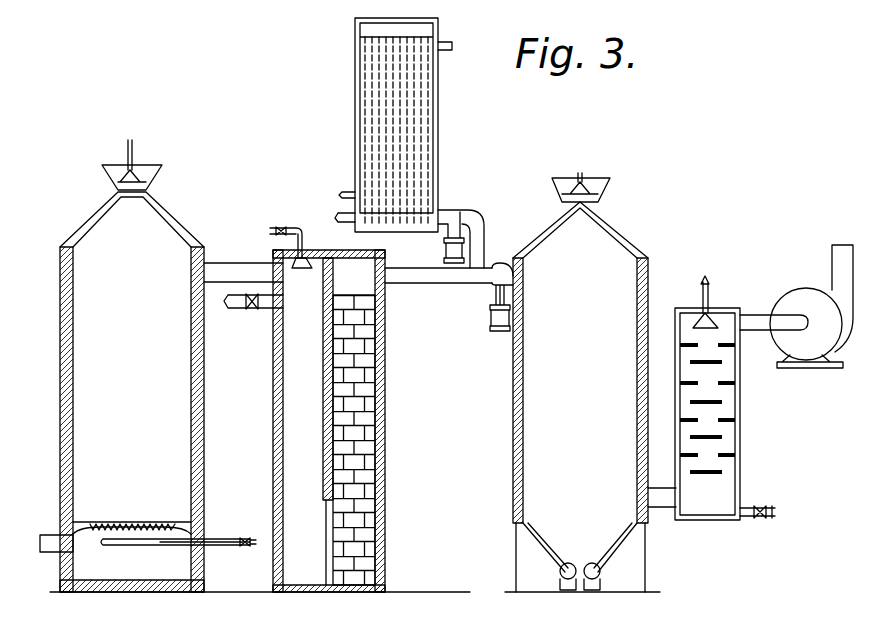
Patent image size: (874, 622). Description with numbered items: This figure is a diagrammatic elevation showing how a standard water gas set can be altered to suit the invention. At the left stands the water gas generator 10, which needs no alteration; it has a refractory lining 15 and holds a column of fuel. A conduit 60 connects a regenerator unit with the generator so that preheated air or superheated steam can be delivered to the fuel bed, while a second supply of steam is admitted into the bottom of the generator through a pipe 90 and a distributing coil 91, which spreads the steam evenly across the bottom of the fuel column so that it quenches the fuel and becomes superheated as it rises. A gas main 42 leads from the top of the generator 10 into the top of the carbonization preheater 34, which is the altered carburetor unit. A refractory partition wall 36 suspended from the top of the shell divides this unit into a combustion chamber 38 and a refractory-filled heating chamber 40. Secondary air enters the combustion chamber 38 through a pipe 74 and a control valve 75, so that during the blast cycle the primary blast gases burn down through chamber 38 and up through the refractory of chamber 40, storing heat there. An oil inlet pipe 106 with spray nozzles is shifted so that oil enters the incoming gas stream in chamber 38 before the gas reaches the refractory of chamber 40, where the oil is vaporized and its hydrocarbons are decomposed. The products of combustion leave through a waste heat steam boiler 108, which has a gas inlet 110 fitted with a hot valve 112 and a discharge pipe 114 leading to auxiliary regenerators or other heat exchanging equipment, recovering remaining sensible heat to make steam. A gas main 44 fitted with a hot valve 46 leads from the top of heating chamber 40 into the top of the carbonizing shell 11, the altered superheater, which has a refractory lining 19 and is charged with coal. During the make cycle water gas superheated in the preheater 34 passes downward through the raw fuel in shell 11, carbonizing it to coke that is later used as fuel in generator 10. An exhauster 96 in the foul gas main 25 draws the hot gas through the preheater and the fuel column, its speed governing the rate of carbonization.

The water gas generator 10 is at (204, 408).
The refractory lining 15 is at (73, 426).
The conduit 60 is at (44, 556).
The distributing coil 91 is at (120, 547).
The pipe 90 is at (236, 548).
The gas main 42 is at (219, 264).
The pipe 74 is at (230, 310).
The control valve 75 is at (254, 312).
The carbonization preheater 34 is at (386, 497).
The combustion chamber 38 is at (297, 497).
The partition wall 36 is at (324, 462).
The heating chamber 40 is at (377, 460).
The oil inlet pipe 106 is at (300, 226).
The waste heat steam boiler 108 is at (438, 120).
The discharge pipe 114 is at (343, 224).
The gas inlet 110 is at (480, 234).
The hot valve 112 is at (457, 230).
The gas main 44 is at (409, 284).
The hot valve 46 is at (492, 318).
The carbonizing shell 11 is at (513, 418).
The refractory lining 19 is at (523, 392).
The foul gas main 25 is at (664, 508).
The exhauster 96 is at (797, 292).